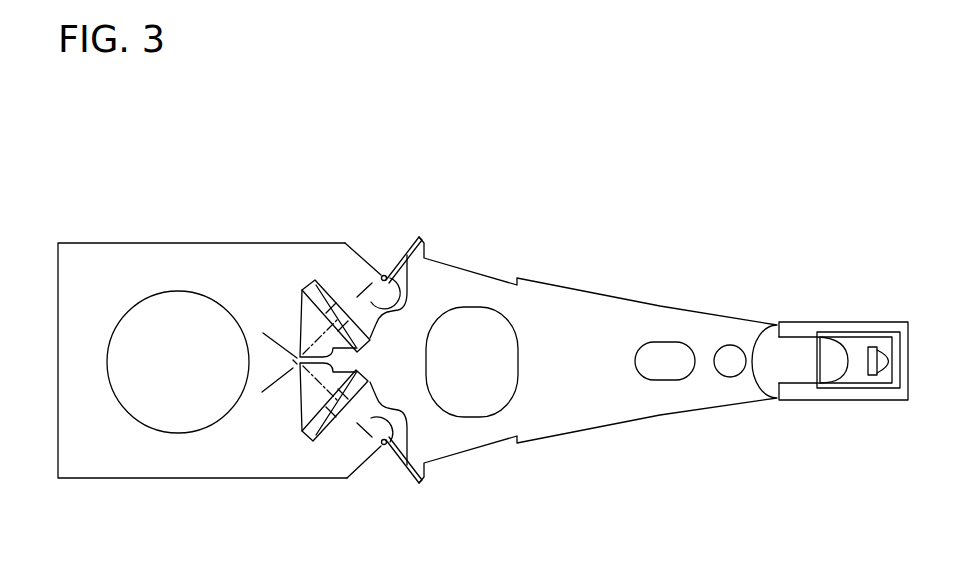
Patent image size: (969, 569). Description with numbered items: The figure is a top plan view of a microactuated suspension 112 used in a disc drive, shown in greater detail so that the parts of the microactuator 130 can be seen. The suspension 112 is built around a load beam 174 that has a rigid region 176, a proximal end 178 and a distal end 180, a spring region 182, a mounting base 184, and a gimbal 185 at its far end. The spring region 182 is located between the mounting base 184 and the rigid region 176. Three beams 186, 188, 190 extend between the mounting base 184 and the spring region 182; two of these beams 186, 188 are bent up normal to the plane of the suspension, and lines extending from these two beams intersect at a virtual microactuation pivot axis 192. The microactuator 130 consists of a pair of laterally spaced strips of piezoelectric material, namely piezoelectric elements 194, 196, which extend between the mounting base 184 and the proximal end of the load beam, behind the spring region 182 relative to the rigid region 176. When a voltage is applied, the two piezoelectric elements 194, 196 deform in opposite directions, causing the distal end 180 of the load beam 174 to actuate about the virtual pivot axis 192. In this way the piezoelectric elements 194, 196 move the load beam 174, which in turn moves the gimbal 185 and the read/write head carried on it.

The suspension 112 is at (683, 132).
The microactuator 130 is at (347, 218).
The load beam 174 is at (653, 432).
The rigid region 176 is at (765, 238).
The proximal end 178 is at (58, 337).
The distal end 180 is at (843, 343).
The spring region 182 is at (522, 207).
The mounting base 184 is at (300, 237).
The gimbal 185 is at (873, 323).
The beam 186 is at (402, 252).
The beam 188 is at (403, 470).
The beam 190 is at (294, 366).
The virtual microactuation pivot axis 192 is at (294, 364).
The piezoelectric element 194 is at (339, 302).
The piezoelectric element 196 is at (333, 420).